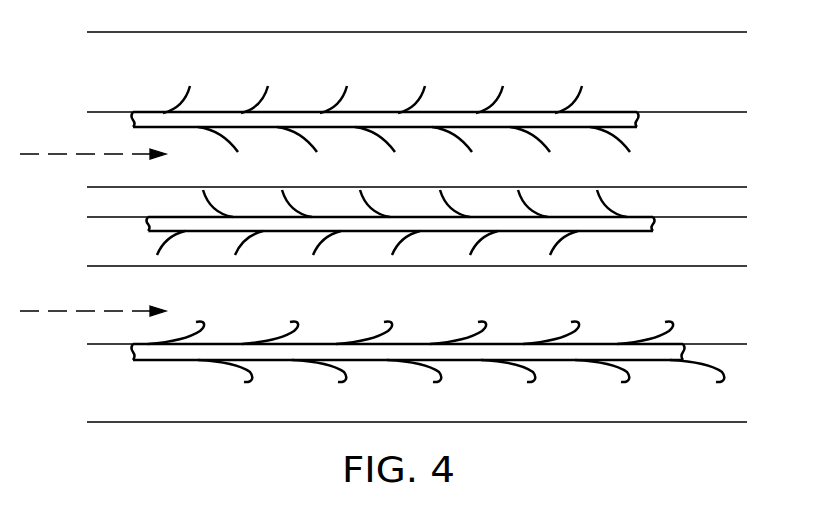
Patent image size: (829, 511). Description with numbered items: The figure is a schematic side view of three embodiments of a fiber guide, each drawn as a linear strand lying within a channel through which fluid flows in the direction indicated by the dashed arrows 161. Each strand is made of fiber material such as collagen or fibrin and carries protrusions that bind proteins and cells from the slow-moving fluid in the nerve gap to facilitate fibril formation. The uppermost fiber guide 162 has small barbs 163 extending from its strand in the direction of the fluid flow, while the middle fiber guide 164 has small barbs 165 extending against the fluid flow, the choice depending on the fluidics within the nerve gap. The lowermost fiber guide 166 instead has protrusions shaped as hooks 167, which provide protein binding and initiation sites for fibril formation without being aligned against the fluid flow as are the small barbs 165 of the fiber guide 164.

The dashed arrows 161 is at (60, 153).
The fiber guide 162 is at (614, 112).
The small barbs 163 is at (567, 99).
The fiber guide 164 is at (625, 232).
The small barbs 165 is at (565, 245).
The fiber guide 166 is at (600, 343).
The hooks 167 is at (727, 380).